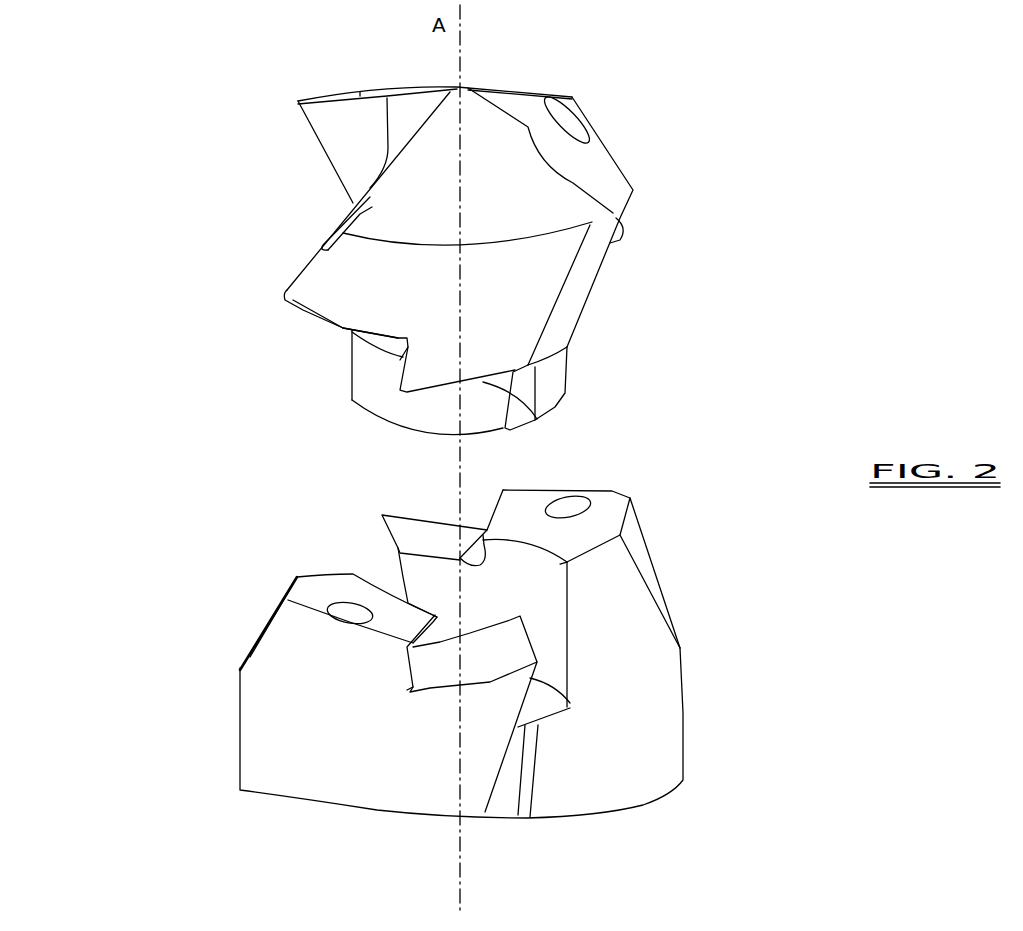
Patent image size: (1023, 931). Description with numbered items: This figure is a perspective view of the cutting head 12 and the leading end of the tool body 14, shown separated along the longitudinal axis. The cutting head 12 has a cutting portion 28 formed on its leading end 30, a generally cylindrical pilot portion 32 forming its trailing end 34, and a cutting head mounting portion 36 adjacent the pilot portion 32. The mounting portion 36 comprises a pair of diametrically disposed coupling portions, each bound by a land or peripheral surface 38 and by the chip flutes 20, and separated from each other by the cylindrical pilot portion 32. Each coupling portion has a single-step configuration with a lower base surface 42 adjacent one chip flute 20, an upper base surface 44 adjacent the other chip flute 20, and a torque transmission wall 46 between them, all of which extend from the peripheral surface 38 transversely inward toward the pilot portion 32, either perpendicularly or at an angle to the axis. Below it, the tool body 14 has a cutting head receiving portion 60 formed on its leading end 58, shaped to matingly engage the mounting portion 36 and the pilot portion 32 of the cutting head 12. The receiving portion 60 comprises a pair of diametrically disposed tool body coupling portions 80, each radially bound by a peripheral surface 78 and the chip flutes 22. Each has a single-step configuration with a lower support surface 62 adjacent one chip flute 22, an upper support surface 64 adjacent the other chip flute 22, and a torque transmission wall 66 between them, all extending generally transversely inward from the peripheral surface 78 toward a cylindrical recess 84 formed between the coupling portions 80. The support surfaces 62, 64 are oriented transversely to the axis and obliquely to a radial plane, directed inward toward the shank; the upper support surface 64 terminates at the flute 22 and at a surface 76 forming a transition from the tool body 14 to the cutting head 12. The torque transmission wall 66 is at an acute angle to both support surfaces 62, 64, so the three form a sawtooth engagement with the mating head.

The cutting head 12 is at (752, 151).
The tool body 14 is at (745, 661).
The chip flute 20 is at (347, 153).
The chip flute 22 is at (398, 542).
The cutting portion 28 is at (360, 95).
The leading end 30 is at (468, 88).
The cylindrical pilot portion 32 is at (365, 372).
The trailing end 34 is at (400, 430).
The cutting head mounting portion 36 is at (339, 331).
The peripheral surface 38 is at (487, 350).
The lower base surface 42 is at (537, 419).
The upper base surface 44 is at (322, 320).
The torque transmission wall 46 is at (400, 360).
The leading end 58 is at (610, 490).
The cutting head receiving portion 60 is at (290, 587).
The lower support surface 62 is at (427, 530).
The upper support surface 64 is at (513, 507).
The torque transmission wall 66 is at (413, 673).
The transition surface 76 is at (640, 550).
The peripheral surface 78 is at (257, 747).
The tool body coupling portion 80 is at (445, 516).
The cylindrical recess 84 is at (533, 593).